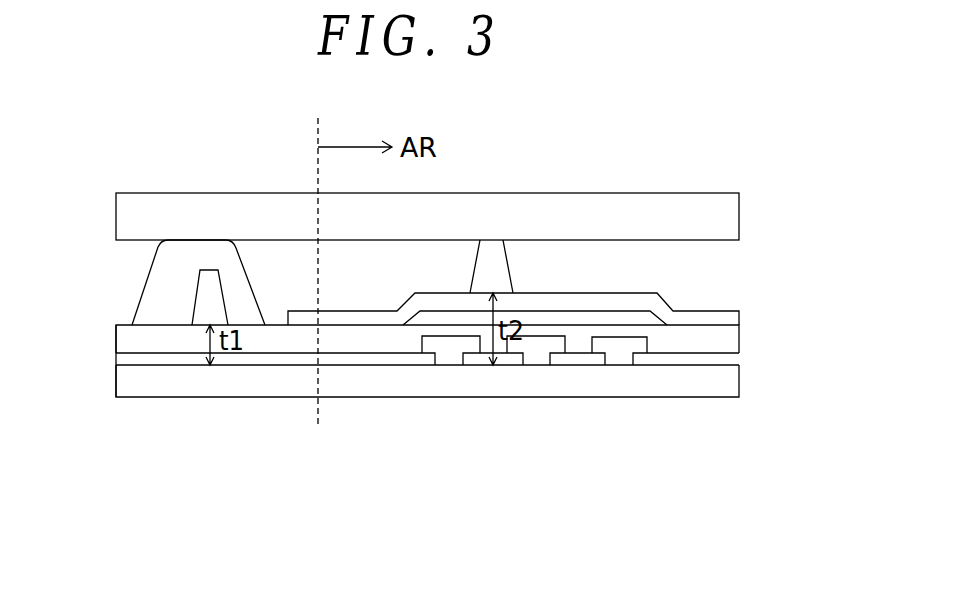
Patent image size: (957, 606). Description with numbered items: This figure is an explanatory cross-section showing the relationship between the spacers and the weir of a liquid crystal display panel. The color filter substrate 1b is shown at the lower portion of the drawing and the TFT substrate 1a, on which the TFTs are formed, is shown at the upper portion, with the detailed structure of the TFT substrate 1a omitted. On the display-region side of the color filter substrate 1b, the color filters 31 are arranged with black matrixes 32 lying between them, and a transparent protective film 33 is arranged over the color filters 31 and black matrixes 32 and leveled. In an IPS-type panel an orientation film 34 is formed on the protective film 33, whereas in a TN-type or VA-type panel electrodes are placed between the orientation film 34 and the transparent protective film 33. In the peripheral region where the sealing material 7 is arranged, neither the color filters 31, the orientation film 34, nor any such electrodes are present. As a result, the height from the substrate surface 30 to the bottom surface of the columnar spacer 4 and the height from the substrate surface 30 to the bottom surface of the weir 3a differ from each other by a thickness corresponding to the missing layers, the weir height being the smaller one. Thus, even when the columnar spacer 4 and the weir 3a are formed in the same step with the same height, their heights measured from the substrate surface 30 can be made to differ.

The TFT substrate 1a is at (697, 200).
The color filter substrate 1b is at (705, 390).
The weir 3a is at (203, 308).
The columnar spacer 4 is at (498, 270).
The sealing material 7 is at (153, 300).
The substrate surface 30 is at (108, 371).
The color filter 31 is at (445, 355).
The black matrix 32 is at (737, 357).
The transparent protective film 33 is at (727, 338).
The orientation film 34 is at (722, 313).